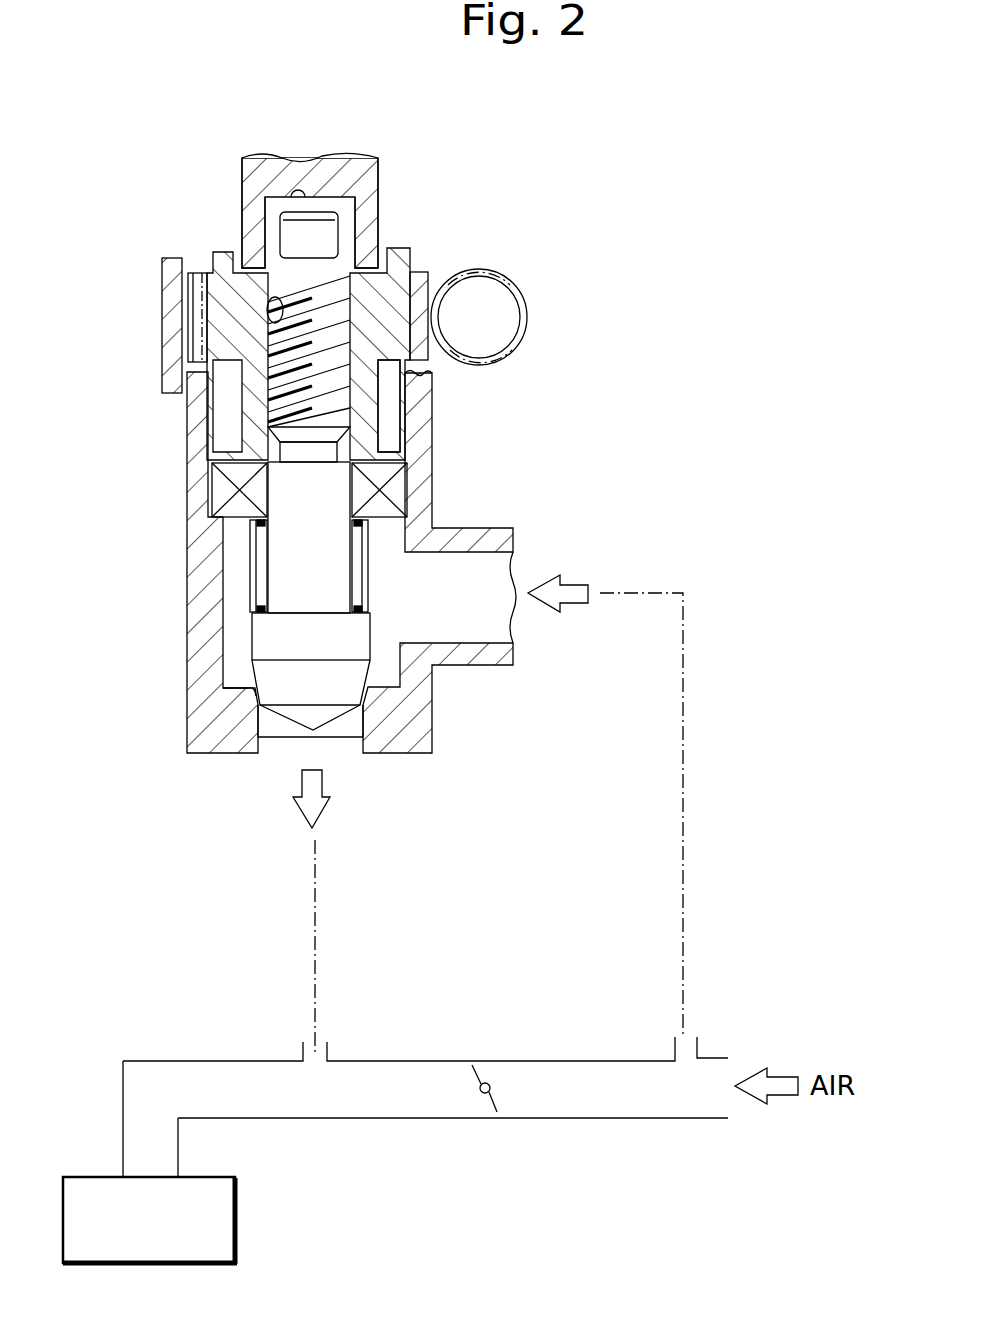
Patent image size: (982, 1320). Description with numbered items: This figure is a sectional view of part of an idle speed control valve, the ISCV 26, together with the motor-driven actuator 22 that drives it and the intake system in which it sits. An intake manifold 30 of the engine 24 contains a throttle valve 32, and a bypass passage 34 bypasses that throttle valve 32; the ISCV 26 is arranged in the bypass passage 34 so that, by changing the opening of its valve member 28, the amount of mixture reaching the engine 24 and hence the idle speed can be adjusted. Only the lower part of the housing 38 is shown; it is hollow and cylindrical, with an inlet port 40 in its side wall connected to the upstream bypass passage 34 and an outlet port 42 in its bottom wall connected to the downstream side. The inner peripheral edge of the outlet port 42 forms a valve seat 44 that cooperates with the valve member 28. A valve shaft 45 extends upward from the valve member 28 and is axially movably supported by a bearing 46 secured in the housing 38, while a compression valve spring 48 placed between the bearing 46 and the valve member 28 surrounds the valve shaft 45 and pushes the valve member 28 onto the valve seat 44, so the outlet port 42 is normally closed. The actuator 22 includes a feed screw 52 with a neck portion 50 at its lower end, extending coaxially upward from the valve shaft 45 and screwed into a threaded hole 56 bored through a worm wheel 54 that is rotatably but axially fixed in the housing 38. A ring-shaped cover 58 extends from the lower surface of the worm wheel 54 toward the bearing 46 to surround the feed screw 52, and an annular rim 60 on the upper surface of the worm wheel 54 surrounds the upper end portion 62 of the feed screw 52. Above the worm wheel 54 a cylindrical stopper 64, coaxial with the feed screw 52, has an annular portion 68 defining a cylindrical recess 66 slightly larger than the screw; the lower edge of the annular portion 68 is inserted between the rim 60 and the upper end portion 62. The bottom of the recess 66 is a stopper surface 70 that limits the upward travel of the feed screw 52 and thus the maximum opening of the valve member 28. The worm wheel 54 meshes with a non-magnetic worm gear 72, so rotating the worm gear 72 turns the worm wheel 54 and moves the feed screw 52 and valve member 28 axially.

The motor-driven actuator 22 is at (462, 390).
The engine 24 is at (236, 1240).
The idle speed control valve (ISCV) 26 is at (155, 267).
The valve member 28 is at (360, 668).
The intake manifold 30 is at (545, 1057).
The throttle valve 32 is at (495, 1115).
The bypass passage 34 is at (688, 770).
The housing 38 is at (190, 630).
The inlet port 40 is at (496, 566).
The outlet port 42 is at (275, 723).
The valve seat 44 is at (247, 693).
The valve shaft 45 is at (283, 543).
The bearing 46 is at (218, 493).
The valve spring 48 is at (247, 588).
The neck portion 50 is at (312, 457).
The feed screw 52 is at (280, 415).
The worm wheel 54 is at (218, 347).
The threaded hole 56 is at (283, 308).
The ring-shaped cover 58 is at (390, 418).
The annular rim 60 is at (222, 262).
The upper end portion 62 is at (367, 225).
The cylindrical stopper 64 is at (335, 160).
The cylindrical recess 66 is at (347, 230).
The annular portion 68 is at (240, 192).
The stopper surface 70 is at (294, 192).
The worm gear 72 is at (503, 273).